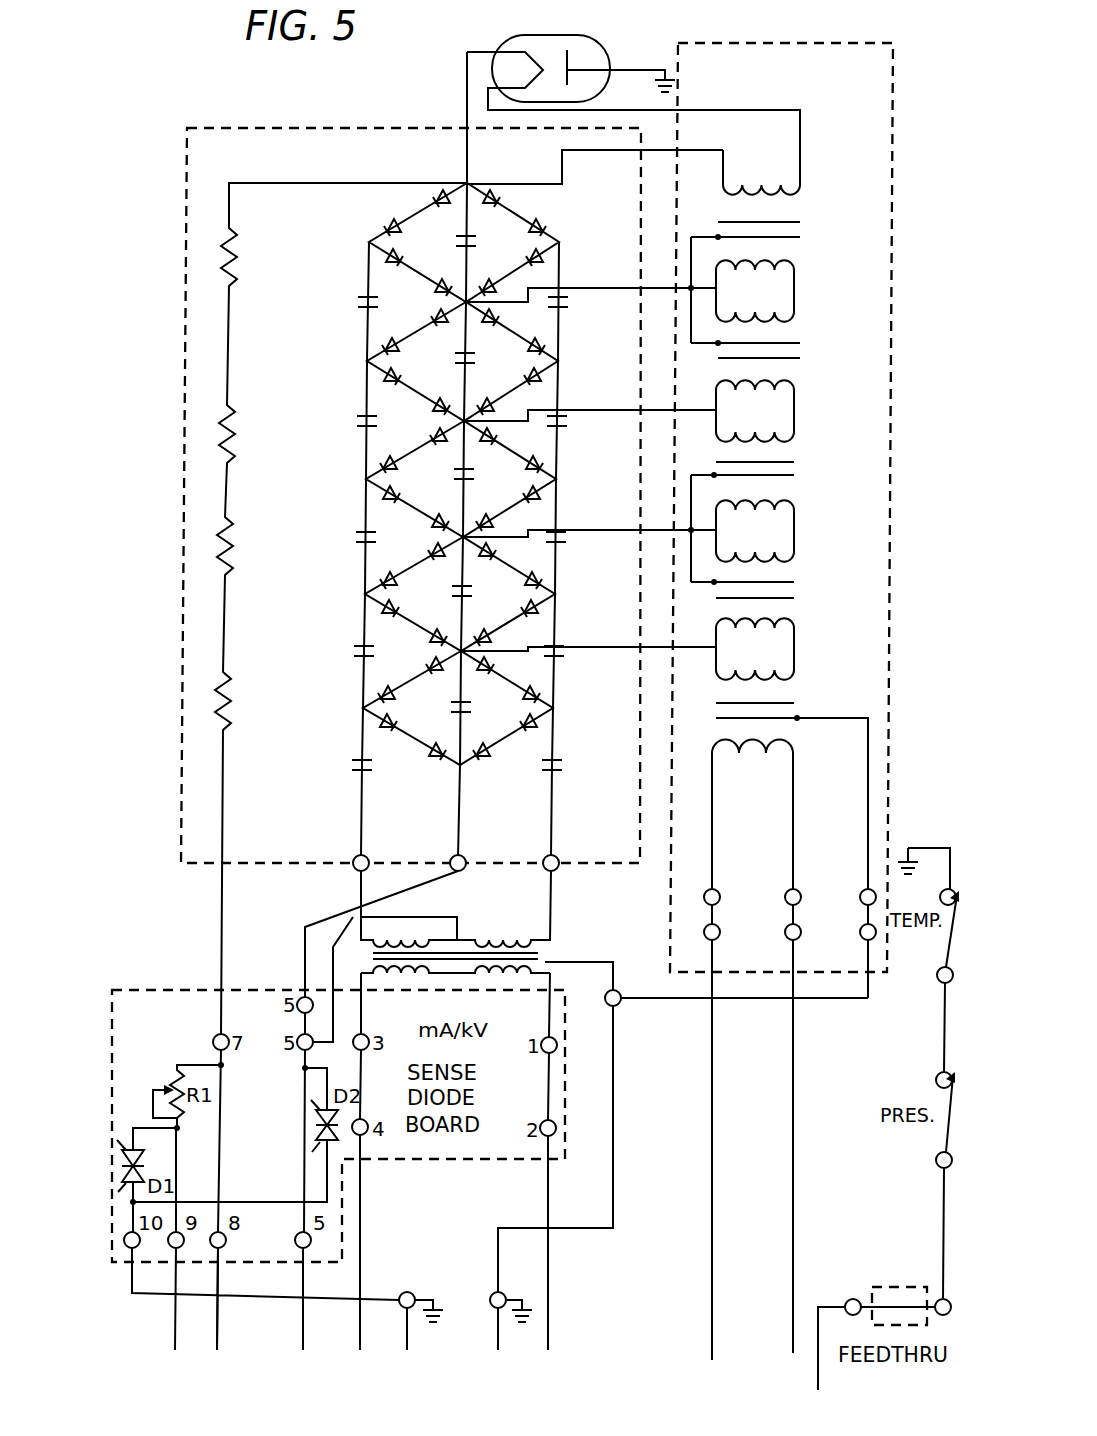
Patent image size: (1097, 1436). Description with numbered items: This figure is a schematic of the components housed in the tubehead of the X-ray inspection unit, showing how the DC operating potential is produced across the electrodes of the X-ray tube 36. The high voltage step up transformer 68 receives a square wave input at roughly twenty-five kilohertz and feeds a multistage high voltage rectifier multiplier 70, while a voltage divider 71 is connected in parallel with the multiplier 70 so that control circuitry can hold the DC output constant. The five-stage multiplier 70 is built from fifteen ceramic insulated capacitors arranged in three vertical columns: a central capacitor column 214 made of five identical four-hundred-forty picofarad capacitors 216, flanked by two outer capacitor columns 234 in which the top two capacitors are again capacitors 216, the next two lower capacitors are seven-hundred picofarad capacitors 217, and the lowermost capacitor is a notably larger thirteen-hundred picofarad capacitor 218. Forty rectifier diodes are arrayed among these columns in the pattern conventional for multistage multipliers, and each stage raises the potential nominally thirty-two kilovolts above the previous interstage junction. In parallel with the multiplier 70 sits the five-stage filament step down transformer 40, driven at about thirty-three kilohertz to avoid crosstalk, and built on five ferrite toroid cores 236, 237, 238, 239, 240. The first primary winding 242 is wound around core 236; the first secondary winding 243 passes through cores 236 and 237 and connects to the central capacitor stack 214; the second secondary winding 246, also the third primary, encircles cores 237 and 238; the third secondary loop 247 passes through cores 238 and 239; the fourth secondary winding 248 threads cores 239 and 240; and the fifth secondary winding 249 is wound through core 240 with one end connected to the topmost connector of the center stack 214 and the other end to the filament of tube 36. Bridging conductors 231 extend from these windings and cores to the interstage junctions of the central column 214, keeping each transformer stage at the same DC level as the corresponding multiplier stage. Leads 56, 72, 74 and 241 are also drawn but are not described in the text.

The X-ray tube 36 is at (612, 46).
The filament step down transformer 40 is at (890, 677).
The high voltage sense lead 56 is at (221, 944).
The high voltage step up transformer 68 is at (562, 953).
The multistage high voltage rectifier multiplier 70 is at (178, 518).
The voltage divider 71 is at (212, 614).
The filament return lead 72 is at (790, 1003).
The filament lead 74 is at (603, 110).
The central capacitor column 214 is at (468, 794).
The capacitor 216 is at (358, 296).
The capacitor 217 is at (356, 530).
The capacitor 218 is at (353, 758).
The bridging conductor 231 is at (592, 152).
The outer capacitor column 234 is at (343, 802).
The ferrite toroid core 236 is at (777, 702).
The ferrite toroid core 237 is at (778, 582).
The ferrite toroid core 238 is at (775, 459).
The ferrite toroid core 239 is at (780, 343).
The ferrite toroid core 240 is at (785, 221).
The primary winding lead 241 is at (866, 787).
The first primary winding 242 is at (740, 752).
The first secondary winding 243 is at (793, 647).
The second secondary winding 246 is at (793, 542).
The third secondary winding 247 is at (795, 413).
The fourth secondary winding 248 is at (795, 292).
The fifth secondary winding 249 is at (800, 184).